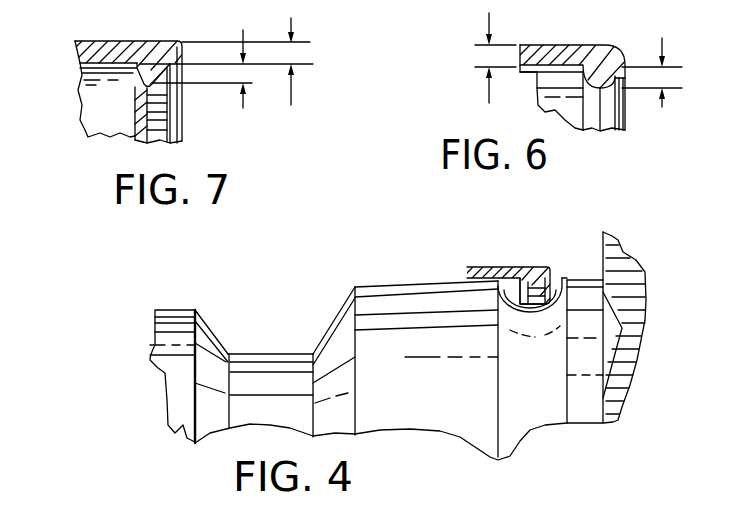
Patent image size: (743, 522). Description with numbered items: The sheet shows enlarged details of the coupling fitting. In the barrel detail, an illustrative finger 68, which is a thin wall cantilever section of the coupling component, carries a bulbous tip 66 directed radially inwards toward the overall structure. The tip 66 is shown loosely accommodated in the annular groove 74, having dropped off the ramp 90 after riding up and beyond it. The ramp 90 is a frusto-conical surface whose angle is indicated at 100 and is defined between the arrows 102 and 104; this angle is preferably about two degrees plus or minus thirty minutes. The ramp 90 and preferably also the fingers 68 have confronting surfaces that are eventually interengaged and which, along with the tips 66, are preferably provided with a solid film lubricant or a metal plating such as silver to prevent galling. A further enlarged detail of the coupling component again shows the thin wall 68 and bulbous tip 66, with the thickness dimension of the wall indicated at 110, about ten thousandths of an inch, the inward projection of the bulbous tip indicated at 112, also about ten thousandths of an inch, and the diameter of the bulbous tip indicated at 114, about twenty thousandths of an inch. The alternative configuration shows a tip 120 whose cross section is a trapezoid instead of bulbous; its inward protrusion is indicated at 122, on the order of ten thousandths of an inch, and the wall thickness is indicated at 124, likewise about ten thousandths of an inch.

In FIG. 6, the bulbous tip 66 is at (627, 107).
In FIG. 4, the bulbous tip 66 is at (530, 295).
In FIG. 6, the finger 68 is at (548, 53).
In FIG. 4, the finger 68 is at (500, 277).
In FIG. 4, the annular groove 74 is at (535, 312).
In FIG. 4, the ramp 90 is at (412, 283).
In FIG. 4, the angle of the ramp 100 is at (447, 290).
In FIG. 4, the arrow 102 is at (448, 312).
In FIG. 4, the arrow 104 is at (447, 305).
In FIG. 6, the thickness dimension of the wall 110 is at (487, 66).
In FIG. 6, the inward projection of the bulbous tip 112 is at (665, 78).
In FIG. 6, the diameter of the bulbous tip 114 is at (596, 123).
In FIG. 7, the tip 120 is at (133, 89).
In FIG. 7, the inward protrusion of the tip 122 is at (243, 70).
In FIG. 7, the wall thickness 124 is at (293, 55).